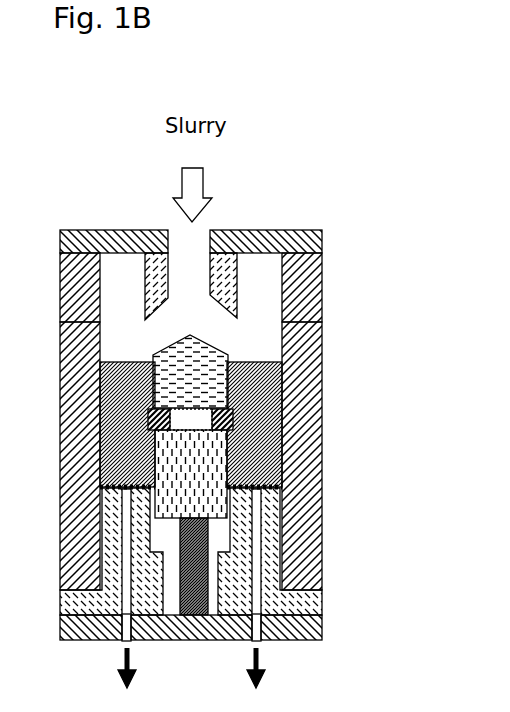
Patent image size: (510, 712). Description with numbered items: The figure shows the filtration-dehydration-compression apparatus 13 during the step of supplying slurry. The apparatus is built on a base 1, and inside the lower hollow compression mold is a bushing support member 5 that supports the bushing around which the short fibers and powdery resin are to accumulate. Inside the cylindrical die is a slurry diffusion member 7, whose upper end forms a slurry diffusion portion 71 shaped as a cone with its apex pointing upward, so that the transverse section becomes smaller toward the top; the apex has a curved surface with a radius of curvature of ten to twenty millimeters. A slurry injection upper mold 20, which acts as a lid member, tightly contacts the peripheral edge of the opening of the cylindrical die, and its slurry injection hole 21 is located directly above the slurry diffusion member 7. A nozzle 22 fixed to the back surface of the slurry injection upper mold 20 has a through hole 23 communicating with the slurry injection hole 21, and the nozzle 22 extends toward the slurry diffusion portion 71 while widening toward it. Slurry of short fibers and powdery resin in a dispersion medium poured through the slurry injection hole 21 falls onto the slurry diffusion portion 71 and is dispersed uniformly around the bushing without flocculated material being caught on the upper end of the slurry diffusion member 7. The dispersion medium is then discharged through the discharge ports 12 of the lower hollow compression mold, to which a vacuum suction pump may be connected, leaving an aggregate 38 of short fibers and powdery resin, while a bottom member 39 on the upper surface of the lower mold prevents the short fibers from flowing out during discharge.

The base 1 is at (322, 636).
The bushing support member 5 is at (208, 492).
The slurry diffusion member 7 is at (212, 358).
The discharge ports 12 is at (257, 600).
The filtration-dehydration-compression apparatus 13 is at (325, 179).
The slurry injection upper mold 20 is at (323, 237).
The slurry injection hole 21 is at (192, 245).
The nozzle 22 is at (142, 289).
The through hole 23 is at (208, 278).
The aggregate 38 is at (265, 428).
The bottom member 39 is at (263, 458).
The slurry diffusion portion 71 is at (195, 348).